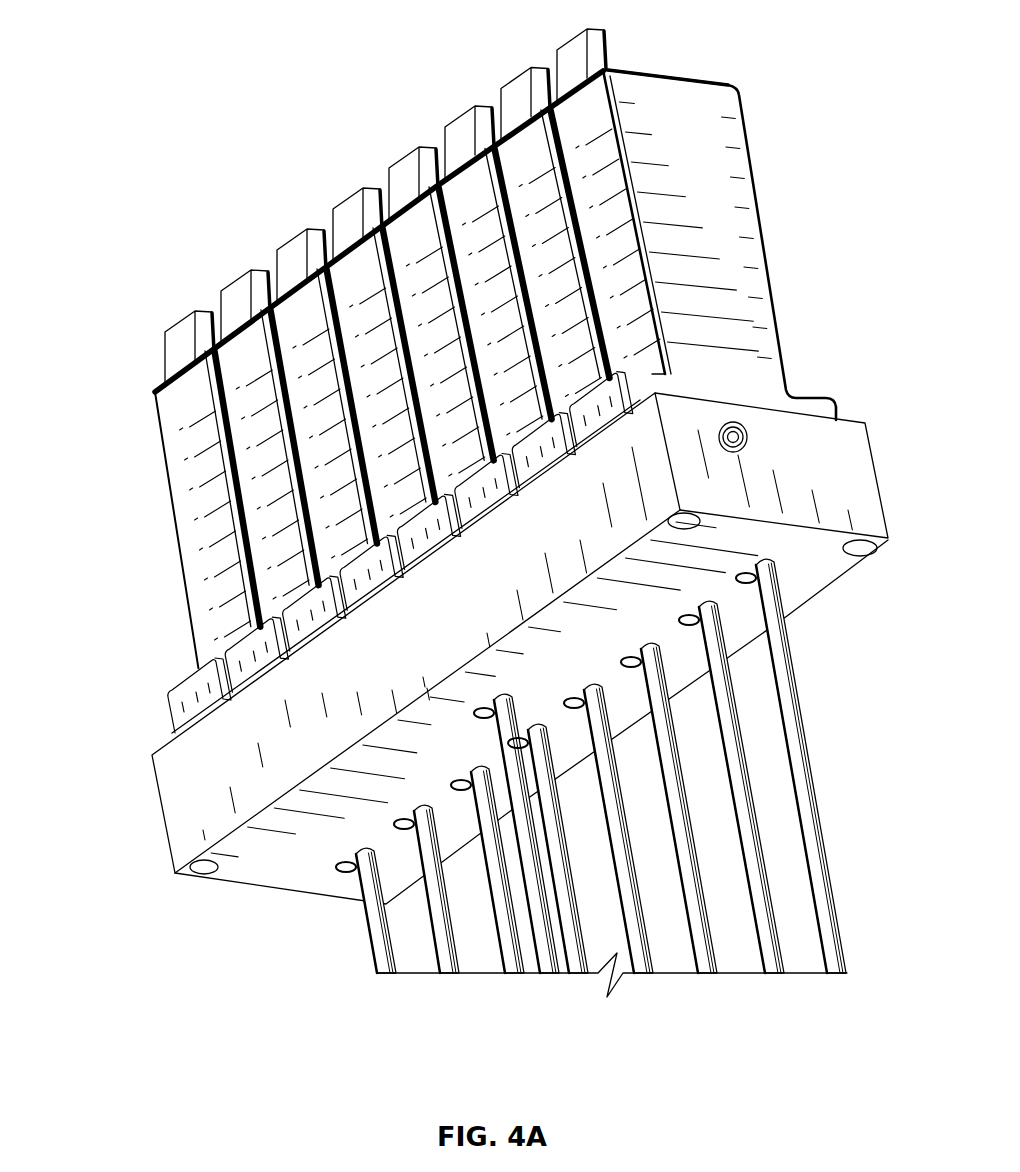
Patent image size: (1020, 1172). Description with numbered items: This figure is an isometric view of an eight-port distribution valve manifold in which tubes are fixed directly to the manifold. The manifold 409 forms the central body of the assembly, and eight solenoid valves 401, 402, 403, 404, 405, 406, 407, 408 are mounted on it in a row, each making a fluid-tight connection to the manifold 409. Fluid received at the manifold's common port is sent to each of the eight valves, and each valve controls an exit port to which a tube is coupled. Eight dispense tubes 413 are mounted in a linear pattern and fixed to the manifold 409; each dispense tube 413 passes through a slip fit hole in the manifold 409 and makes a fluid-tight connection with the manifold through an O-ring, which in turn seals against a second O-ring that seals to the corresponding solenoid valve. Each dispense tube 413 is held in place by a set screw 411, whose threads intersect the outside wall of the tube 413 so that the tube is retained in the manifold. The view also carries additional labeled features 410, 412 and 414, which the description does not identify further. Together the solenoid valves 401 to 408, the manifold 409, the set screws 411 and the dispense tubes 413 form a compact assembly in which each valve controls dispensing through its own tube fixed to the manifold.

The solenoid valve 401 is at (577, 112).
The solenoid valve 402 is at (520, 153).
The solenoid valve 403 is at (465, 195).
The solenoid valve 404 is at (408, 237).
The solenoid valve 405 is at (350, 277).
The solenoid valve 406 is at (293, 320).
The solenoid valve 407 is at (237, 362).
The solenoid valve 408 is at (178, 398).
The manifold 409 is at (202, 762).
The contact pin 410 is at (484, 717).
The set screw 411 is at (352, 873).
The pin tail break line 412 is at (547, 957).
The dispense tube 413 is at (833, 955).
The mounting hole 414 is at (742, 430).